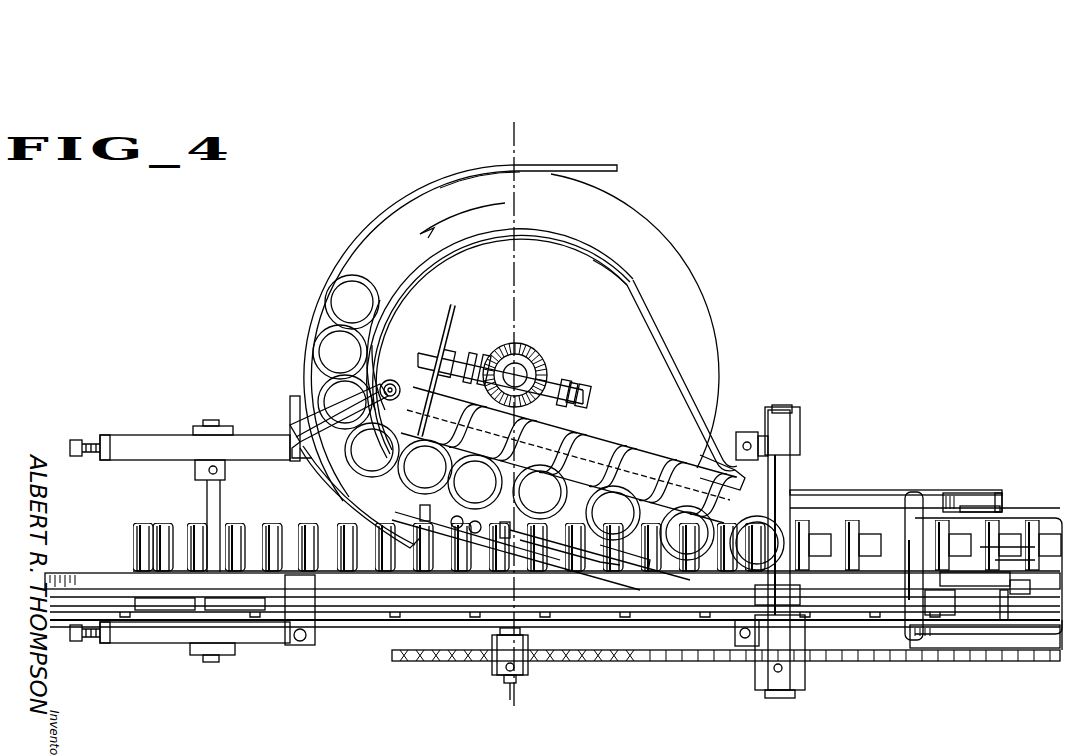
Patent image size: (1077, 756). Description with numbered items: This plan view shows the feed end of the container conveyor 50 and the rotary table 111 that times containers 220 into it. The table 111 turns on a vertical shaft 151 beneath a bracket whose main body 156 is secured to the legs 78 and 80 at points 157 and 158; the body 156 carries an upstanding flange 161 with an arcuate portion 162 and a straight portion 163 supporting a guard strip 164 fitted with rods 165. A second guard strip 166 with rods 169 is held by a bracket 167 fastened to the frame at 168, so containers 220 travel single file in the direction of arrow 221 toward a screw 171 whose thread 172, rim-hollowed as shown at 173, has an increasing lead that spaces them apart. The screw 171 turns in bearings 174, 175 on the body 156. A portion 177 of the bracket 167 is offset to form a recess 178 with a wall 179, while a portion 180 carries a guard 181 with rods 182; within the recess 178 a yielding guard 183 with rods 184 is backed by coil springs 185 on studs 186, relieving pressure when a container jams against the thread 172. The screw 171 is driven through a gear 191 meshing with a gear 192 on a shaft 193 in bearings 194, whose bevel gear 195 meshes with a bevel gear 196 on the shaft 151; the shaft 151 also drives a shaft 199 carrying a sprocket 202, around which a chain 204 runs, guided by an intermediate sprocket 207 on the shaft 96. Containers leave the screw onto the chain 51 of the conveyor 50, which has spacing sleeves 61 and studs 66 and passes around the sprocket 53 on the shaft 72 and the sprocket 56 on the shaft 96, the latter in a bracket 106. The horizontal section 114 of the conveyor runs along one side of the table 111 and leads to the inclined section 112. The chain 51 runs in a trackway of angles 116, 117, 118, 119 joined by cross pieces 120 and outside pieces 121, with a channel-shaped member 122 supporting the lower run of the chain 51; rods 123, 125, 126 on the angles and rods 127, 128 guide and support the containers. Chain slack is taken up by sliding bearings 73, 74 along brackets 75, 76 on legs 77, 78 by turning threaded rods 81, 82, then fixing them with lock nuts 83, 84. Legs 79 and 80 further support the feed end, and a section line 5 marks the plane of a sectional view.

The section line 5 is at (520, 131).
The conveyor 50 is at (1002, 524).
The chain 51 is at (130, 606).
The sprocket 53 is at (238, 608).
The sprocket 56 is at (820, 590).
The spacing sleeves 61 is at (1030, 590).
The studs 66 is at (185, 532).
The shaft 72 is at (214, 419).
The bearing 73 is at (198, 655).
The bearing 74 is at (198, 428).
The bracket 75 is at (150, 643).
The bracket 76 is at (143, 440).
The leg 77 is at (292, 645).
The leg 78 is at (290, 430).
The leg 79 is at (746, 646).
The leg 80 is at (755, 436).
The threaded rod 81 is at (90, 643).
The threaded rod 82 is at (90, 440).
The lock nut 83 is at (104, 645).
The lock nut 84 is at (106, 435).
The shaft 96 is at (792, 472).
The bracket 106 is at (798, 440).
The table 111 is at (690, 278).
The inclined section 112 is at (987, 506).
The horizontal section 114 is at (455, 598).
The angle 116 is at (940, 612).
The angle 117 is at (1012, 618).
The angle 118 is at (950, 493).
The angle 119 is at (1000, 492).
The cross pieces 120 is at (914, 492).
The pieces 121 is at (995, 640).
The channel-shaped member 122 is at (1062, 650).
The rod 123 is at (935, 572).
The rod 125 is at (969, 506).
The rod 126 is at (994, 510).
The rod 127 is at (1030, 561).
The rod 128 is at (1022, 546).
The vertical shaft 151 is at (540, 356).
The main body 156 is at (600, 305).
The securing point 157 is at (328, 400).
The securing point 158 is at (740, 438).
The upstanding flange 161 is at (560, 245).
The arcuate portion 162 is at (400, 290).
The straight portion 163 is at (683, 375).
The guard strip 164 is at (418, 262).
The rods 165 is at (494, 240).
The guard strip 166 is at (445, 178).
The bracket 167 is at (395, 502).
The fastening point 168 is at (337, 414).
The rods 169 is at (487, 178).
The screw 171 is at (585, 445).
The thread 172 is at (520, 430).
The rim-hollowed thread 173 is at (620, 440).
The bearing 174 is at (412, 400).
The bearing 175 is at (725, 493).
The offset portion 177 is at (486, 548).
The recess 178 is at (462, 530).
The wall 179 is at (453, 531).
The portion 180 is at (605, 565).
The guard strip 181 is at (598, 538).
The rods 182 is at (622, 566).
The guard 183 is at (475, 482).
The rods 184 is at (540, 492).
The coil springs 185 is at (552, 512).
The studs 186 is at (461, 529).
The gear 191 is at (440, 412).
The gear 192 is at (455, 308).
The shaft 193 is at (565, 380).
The bearings 194 is at (470, 355).
The bevel gear 195 is at (484, 360).
The bevel gear 196 is at (518, 350).
The shaft 199 is at (506, 683).
The sprocket 202 is at (482, 660).
The chain 204 is at (660, 662).
The sprocket 207 is at (817, 673).
The containers 220 is at (350, 347).
The arrow 221 is at (458, 213).